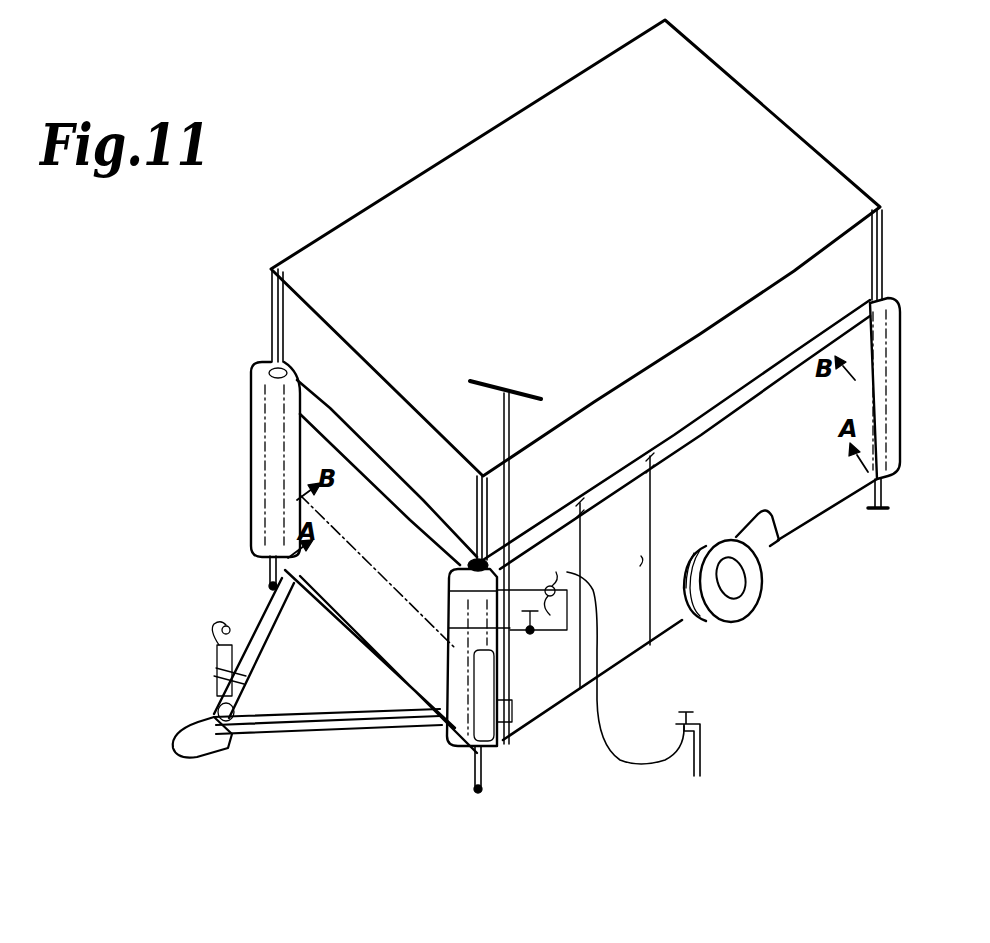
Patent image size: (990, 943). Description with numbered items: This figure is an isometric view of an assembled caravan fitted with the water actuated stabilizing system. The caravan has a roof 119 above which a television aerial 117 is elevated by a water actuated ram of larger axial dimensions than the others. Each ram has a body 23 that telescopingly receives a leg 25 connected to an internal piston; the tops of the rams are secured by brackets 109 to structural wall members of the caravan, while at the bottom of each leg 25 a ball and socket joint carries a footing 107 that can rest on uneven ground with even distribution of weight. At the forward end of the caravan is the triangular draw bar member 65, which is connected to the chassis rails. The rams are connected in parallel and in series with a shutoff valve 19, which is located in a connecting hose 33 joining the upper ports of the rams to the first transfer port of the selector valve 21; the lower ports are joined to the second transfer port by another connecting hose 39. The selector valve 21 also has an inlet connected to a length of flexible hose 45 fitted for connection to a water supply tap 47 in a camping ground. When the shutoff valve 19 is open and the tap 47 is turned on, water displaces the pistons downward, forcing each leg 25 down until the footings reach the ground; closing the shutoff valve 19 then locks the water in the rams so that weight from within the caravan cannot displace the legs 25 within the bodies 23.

The roof 119 is at (630, 209).
The leg 25 is at (272, 316).
The television aerial 117 is at (518, 395).
The body 23 is at (264, 437).
The connecting hose 39 is at (262, 416).
The triangular draw bar member 65 is at (222, 630).
The footing 107 is at (272, 590).
The connecting hose 33 is at (306, 498).
The shutoff valve 19 is at (508, 642).
The selector valve 21 is at (532, 634).
The flexible hose 45 is at (640, 768).
The water supply tap 47 is at (700, 722).
The bracket 109 is at (514, 733).